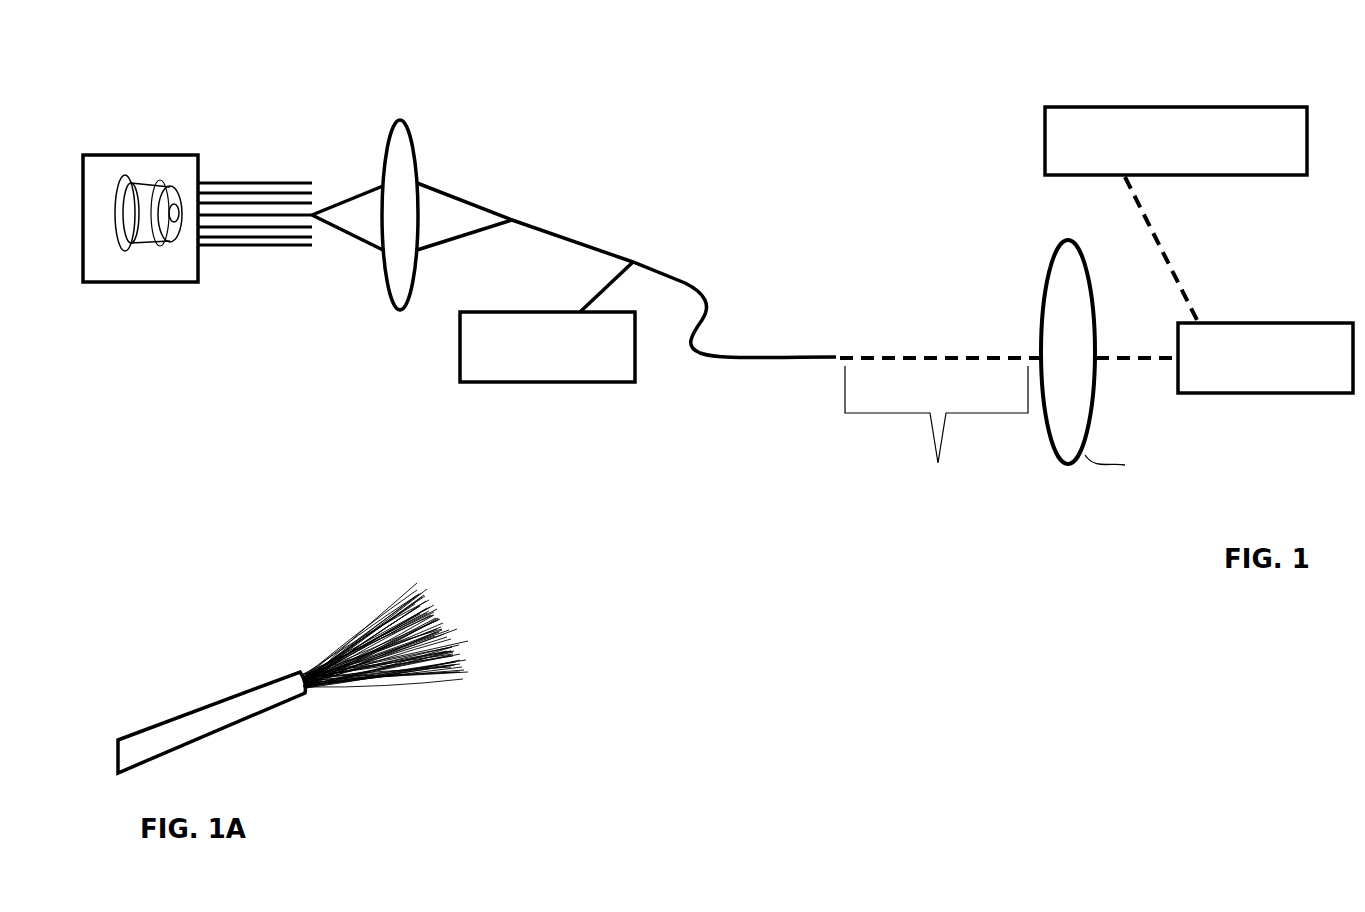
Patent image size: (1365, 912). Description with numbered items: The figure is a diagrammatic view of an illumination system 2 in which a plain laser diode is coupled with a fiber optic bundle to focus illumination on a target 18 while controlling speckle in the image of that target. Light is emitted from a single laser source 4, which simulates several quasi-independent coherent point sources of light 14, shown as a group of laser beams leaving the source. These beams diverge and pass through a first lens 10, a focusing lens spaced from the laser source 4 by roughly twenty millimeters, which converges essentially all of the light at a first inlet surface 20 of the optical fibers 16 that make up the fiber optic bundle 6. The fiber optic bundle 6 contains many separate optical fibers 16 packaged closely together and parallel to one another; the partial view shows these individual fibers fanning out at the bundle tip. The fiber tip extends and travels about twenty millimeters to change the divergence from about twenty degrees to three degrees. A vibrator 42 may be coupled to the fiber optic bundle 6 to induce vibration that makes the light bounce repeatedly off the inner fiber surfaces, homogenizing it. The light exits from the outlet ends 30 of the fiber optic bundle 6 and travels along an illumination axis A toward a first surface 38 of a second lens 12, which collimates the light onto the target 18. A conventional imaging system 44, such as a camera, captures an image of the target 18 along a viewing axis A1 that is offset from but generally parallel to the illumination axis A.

In FIG. 1, the illumination system 2 is at (895, 132).
In FIG. 1, the laser source 4 is at (155, 155).
In FIG. 1, the fiber optic bundle 6 is at (610, 250).
In FIG. 1A, the fiber optic bundle 6 is at (205, 702).
In FIG. 1, the first lens 10 is at (400, 120).
In FIG. 1, the second lens 12 is at (1125, 465).
In FIG. 1, the point sources of light 14 is at (278, 180).
In FIG. 1A, the optical fibers 16 is at (375, 672).
In FIG. 1, the target 18 is at (1265, 323).
In FIG. 1, the first inlet surface 20 is at (500, 210).
In FIG. 1A, the first inlet surface 20 is at (440, 603).
In FIG. 1, the outlet ends 30 is at (833, 355).
In FIG. 1, the first surface 38 is at (1045, 285).
In FIG. 1, the vibrator 42 is at (508, 383).
In FIG. 1, the imaging system 44 is at (1045, 137).
In FIG. 1, the illumination axis A is at (1148, 362).
In FIG. 1, the viewing axis A1 is at (1158, 235).